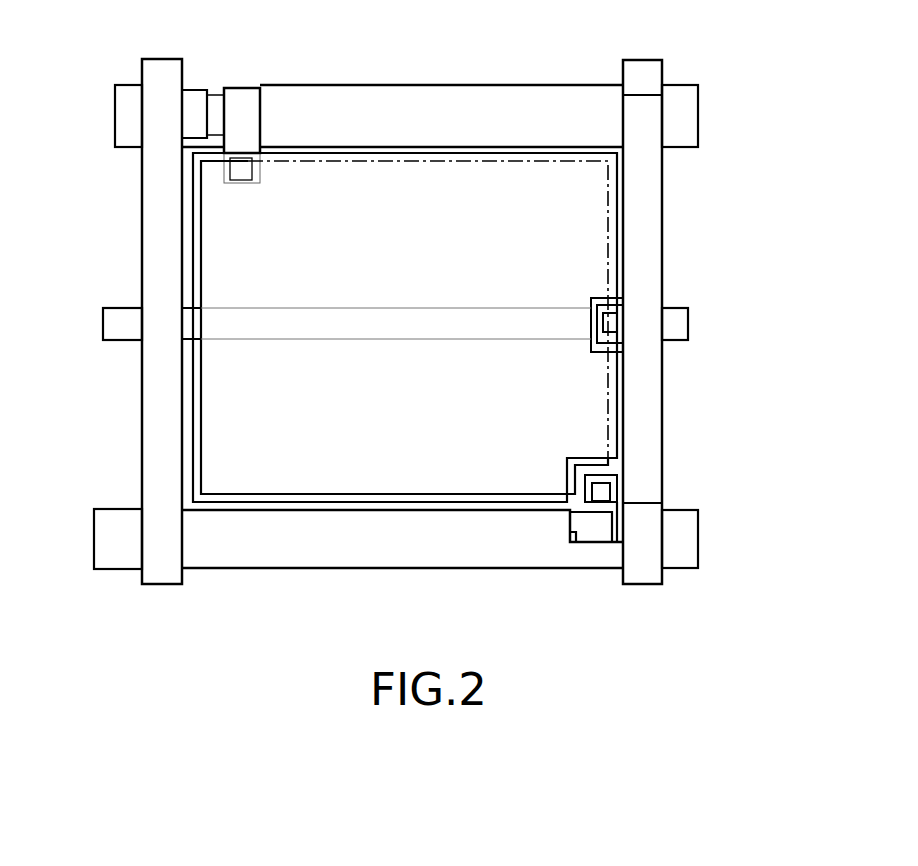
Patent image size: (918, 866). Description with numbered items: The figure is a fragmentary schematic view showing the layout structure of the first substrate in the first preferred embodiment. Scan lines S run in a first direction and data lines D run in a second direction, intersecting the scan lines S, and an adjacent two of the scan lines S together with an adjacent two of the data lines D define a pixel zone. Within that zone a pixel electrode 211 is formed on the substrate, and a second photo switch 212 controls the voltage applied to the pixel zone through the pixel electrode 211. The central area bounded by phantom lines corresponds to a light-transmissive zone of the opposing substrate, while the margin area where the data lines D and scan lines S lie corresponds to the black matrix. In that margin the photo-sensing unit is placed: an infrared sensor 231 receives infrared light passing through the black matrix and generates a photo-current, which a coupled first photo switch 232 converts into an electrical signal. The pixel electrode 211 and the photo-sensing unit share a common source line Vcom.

The data line D is at (152, 418).
The scan line S is at (552, 107).
The pixel electrode 211 is at (445, 217).
The second photo switch 212 is at (242, 78).
The infrared sensor 231 is at (640, 220).
The first photo switch 232 is at (624, 478).
The common source line Vcom is at (689, 325).